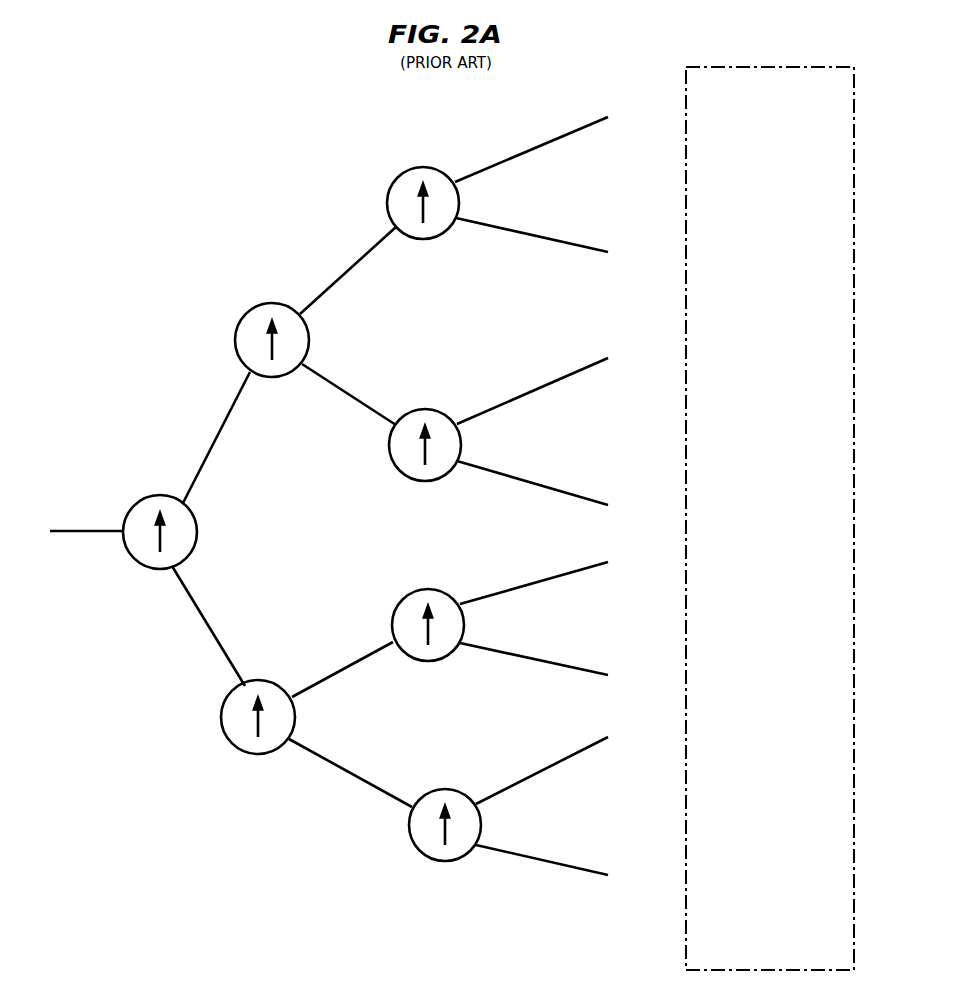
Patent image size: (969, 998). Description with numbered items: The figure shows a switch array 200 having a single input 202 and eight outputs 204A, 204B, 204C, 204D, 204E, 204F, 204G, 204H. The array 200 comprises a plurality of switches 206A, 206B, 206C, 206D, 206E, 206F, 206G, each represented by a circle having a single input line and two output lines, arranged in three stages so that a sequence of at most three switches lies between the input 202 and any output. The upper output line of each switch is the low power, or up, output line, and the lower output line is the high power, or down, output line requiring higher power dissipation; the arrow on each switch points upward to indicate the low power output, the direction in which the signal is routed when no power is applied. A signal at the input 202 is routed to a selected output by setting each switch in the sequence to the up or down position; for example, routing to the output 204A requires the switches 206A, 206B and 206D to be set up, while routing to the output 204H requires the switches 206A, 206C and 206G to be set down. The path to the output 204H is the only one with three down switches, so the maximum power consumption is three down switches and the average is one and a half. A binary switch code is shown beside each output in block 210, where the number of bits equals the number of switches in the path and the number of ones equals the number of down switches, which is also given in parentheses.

The switch array 200 is at (195, 108).
The input 202 is at (72, 530).
The output 204A is at (553, 146).
The output 204B is at (553, 241).
The output 204C is at (554, 387).
The output 204D is at (554, 488).
The output 204E is at (555, 579).
The output 204F is at (555, 665).
The output 204G is at (563, 767).
The output 204H is at (563, 867).
The switch 206A is at (140, 496).
The switch 206B is at (262, 303).
The switch 206C is at (260, 680).
The switch 206D is at (415, 167).
The switch 206E is at (422, 409).
The switch 206F is at (424, 589).
The switch 206G is at (442, 789).
The block 210 is at (808, 66).